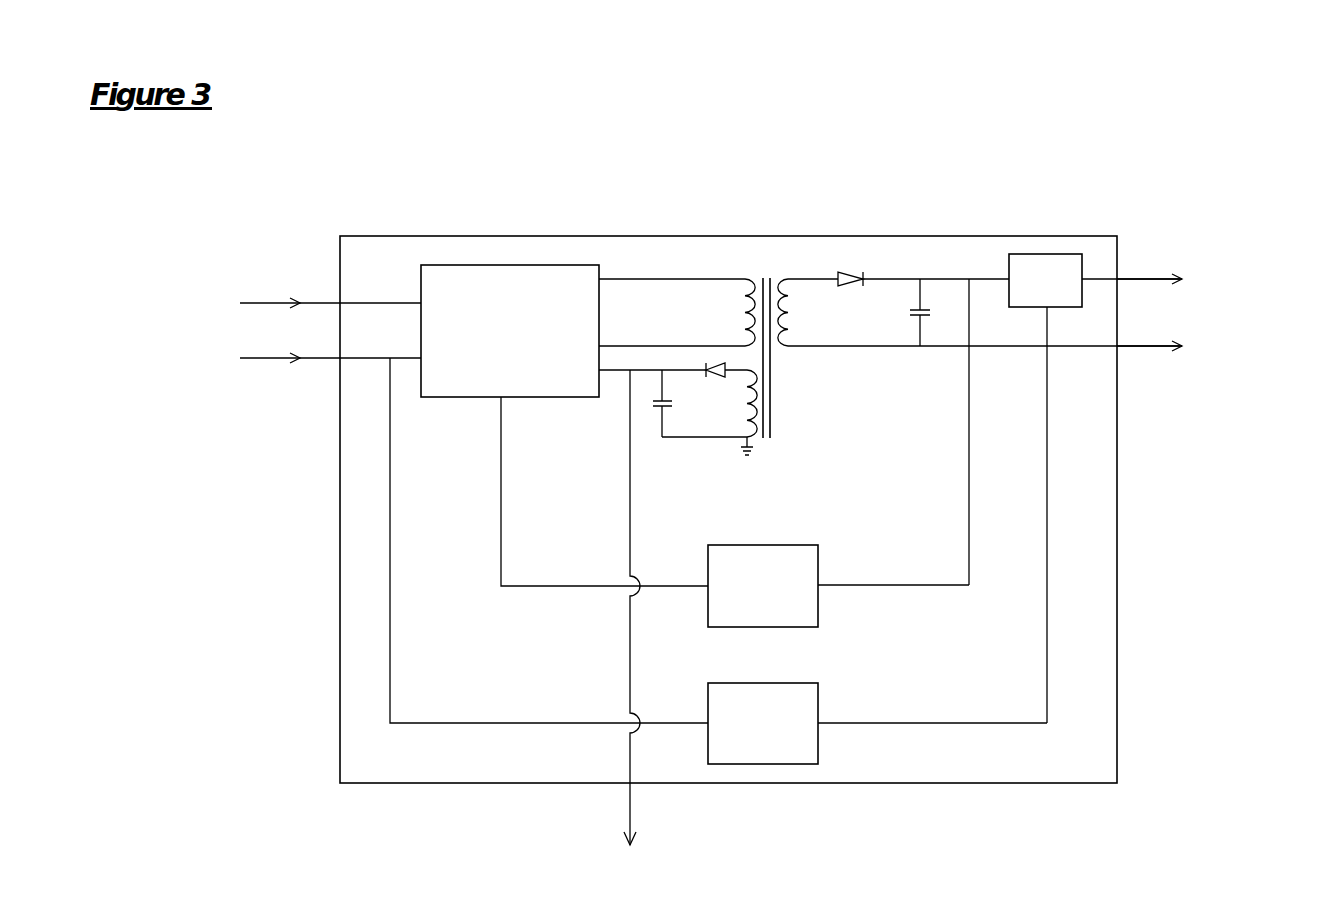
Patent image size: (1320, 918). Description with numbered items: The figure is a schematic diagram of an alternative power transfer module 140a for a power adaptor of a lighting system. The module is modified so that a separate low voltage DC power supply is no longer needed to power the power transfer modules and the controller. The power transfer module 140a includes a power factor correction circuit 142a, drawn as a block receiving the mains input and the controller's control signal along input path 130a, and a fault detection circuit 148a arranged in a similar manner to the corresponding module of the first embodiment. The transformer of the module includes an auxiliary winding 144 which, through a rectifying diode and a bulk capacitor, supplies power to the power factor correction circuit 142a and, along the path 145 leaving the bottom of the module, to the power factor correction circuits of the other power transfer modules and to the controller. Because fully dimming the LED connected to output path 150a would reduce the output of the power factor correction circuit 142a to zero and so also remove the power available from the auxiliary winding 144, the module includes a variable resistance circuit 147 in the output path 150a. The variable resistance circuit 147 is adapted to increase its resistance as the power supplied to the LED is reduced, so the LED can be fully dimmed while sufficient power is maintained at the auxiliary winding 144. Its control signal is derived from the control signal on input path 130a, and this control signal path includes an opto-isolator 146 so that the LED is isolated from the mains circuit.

The input path 130a is at (263, 355).
The power transfer module 140a is at (357, 753).
The power factor correction circuit 142a is at (510, 331).
The auxiliary winding 144 is at (757, 403).
The auxiliary output line 145 is at (630, 818).
The opto-isolator 146 is at (763, 723).
The variable resistance circuit 147 is at (1045, 280).
The fault detection circuit 148a is at (763, 586).
The output path 150a is at (1145, 345).